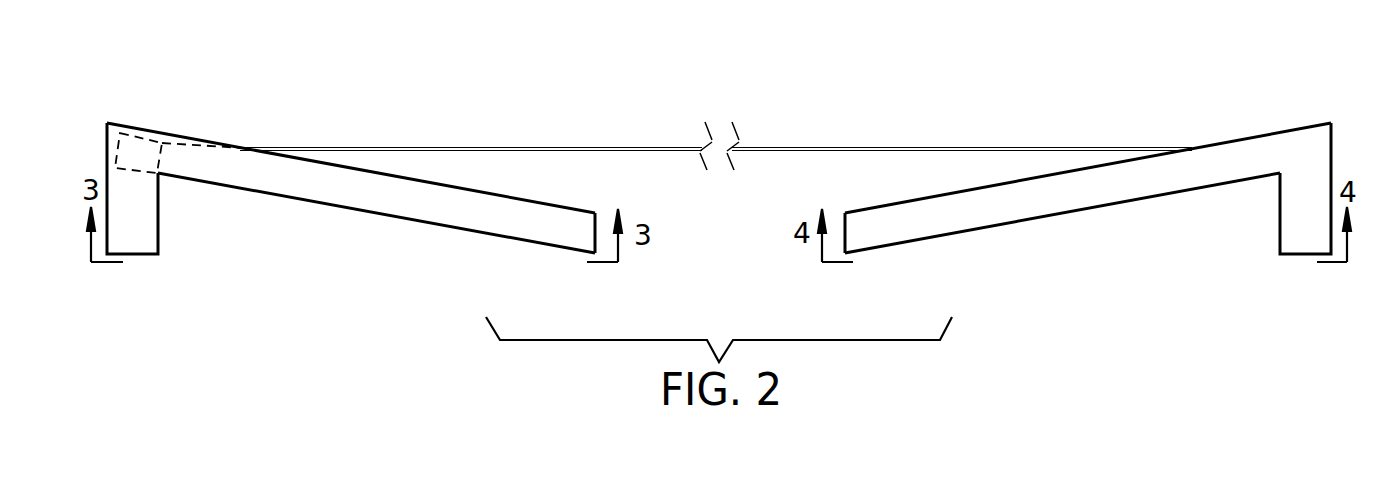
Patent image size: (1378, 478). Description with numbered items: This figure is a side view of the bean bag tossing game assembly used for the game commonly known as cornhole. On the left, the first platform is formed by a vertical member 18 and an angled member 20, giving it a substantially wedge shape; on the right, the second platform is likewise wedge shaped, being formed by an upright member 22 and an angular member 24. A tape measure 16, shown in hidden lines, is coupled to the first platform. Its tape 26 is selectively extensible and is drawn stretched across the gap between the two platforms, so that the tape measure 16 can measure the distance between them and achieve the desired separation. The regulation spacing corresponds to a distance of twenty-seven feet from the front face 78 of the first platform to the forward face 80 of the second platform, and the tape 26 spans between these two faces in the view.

The tape measure 16 is at (136, 153).
The vertical member 18 is at (145, 227).
The angled member 20 is at (223, 165).
The upright member 22 is at (1292, 232).
The angular member 24 is at (1223, 152).
The tape 26 is at (470, 147).
The front face 78 is at (597, 227).
The forward face 80 is at (842, 232).